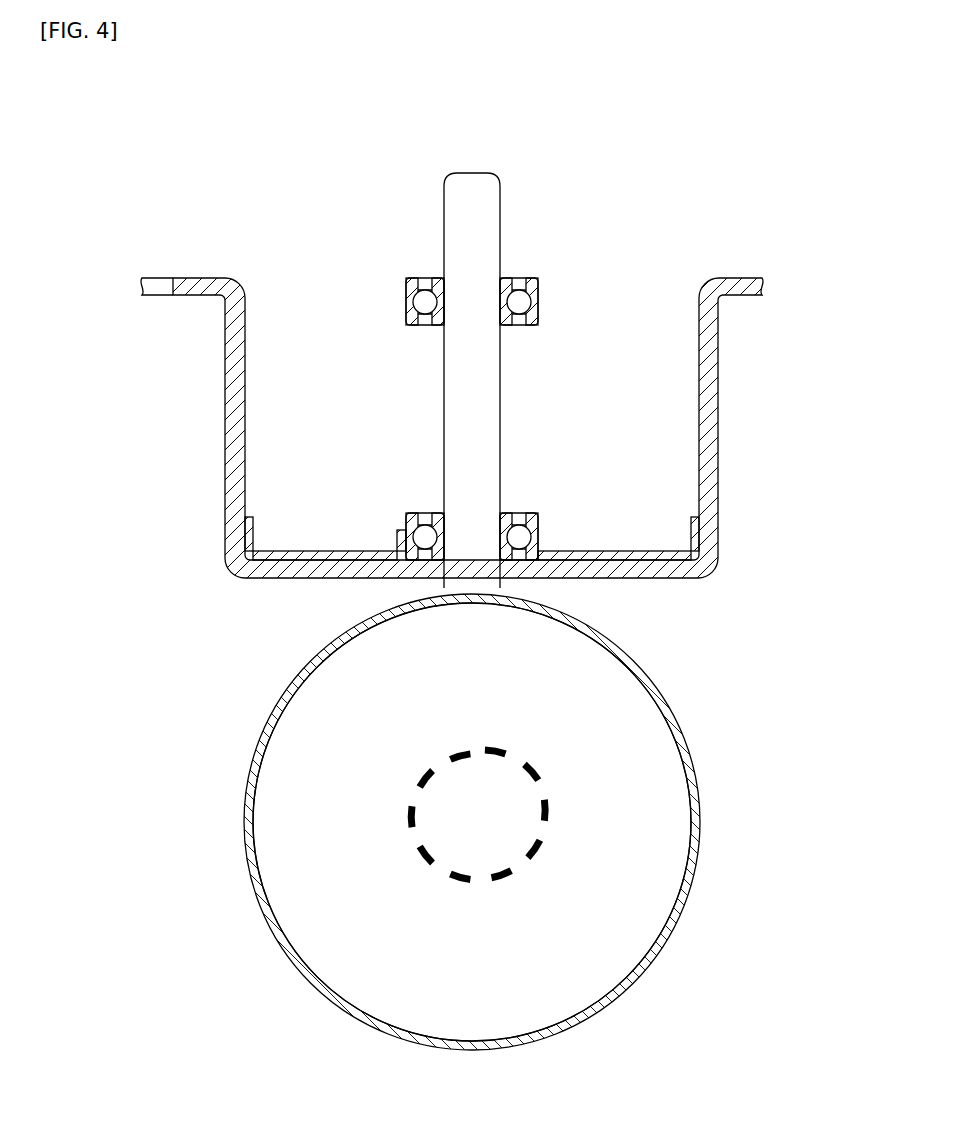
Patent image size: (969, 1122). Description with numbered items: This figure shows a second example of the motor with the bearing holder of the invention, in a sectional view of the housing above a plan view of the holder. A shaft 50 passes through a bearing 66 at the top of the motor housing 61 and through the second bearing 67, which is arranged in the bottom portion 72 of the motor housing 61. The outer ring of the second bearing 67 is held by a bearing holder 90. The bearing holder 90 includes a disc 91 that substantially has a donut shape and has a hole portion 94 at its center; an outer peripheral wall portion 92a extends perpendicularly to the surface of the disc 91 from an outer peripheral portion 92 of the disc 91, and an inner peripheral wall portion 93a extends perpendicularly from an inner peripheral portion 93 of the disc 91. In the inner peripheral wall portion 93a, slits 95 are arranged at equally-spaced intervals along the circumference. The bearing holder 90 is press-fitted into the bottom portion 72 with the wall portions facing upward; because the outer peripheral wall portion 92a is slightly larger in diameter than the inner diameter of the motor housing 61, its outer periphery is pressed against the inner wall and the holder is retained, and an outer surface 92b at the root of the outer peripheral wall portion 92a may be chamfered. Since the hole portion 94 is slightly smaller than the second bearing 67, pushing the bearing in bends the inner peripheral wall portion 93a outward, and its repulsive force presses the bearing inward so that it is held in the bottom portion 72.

The rotary shaft 50 is at (500, 208).
The upper bearing 66 is at (513, 280).
The second bearing 67 is at (520, 558).
The motor housing 61 is at (718, 388).
The bottom portion 72 is at (640, 548).
The outer peripheral wall portion 92a is at (248, 537).
The outer surface 92b is at (715, 560).
The inner peripheral wall portion 93a is at (395, 545).
The bearing holder 90 is at (503, 822).
The disc 91 is at (640, 785).
The outer peripheral portion 92 is at (700, 812).
The inner peripheral portion 93 is at (543, 857).
The hole portion 94 is at (450, 830).
The slits 95 is at (410, 852).